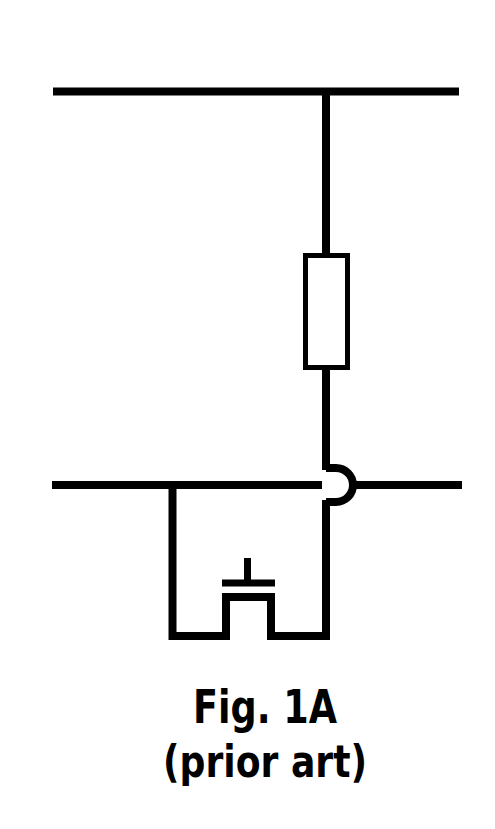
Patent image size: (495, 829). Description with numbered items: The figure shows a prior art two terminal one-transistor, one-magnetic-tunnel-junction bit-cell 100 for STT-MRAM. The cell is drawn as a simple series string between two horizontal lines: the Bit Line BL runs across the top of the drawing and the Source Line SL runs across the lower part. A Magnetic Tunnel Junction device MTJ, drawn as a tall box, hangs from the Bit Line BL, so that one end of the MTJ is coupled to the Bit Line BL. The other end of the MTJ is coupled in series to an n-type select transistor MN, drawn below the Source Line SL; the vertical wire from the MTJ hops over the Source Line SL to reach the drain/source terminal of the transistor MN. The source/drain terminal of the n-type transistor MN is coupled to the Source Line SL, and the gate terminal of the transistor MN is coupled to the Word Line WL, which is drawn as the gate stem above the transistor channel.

The bit-cell 100 is at (120, 164).
The Bit Line BL is at (256, 71).
The Source Line SL is at (257, 463).
The Word Line WL is at (248, 551).
The n-type select transistor MN is at (263, 565).
The Magnetic Tunnel Junction device MTJ is at (327, 280).